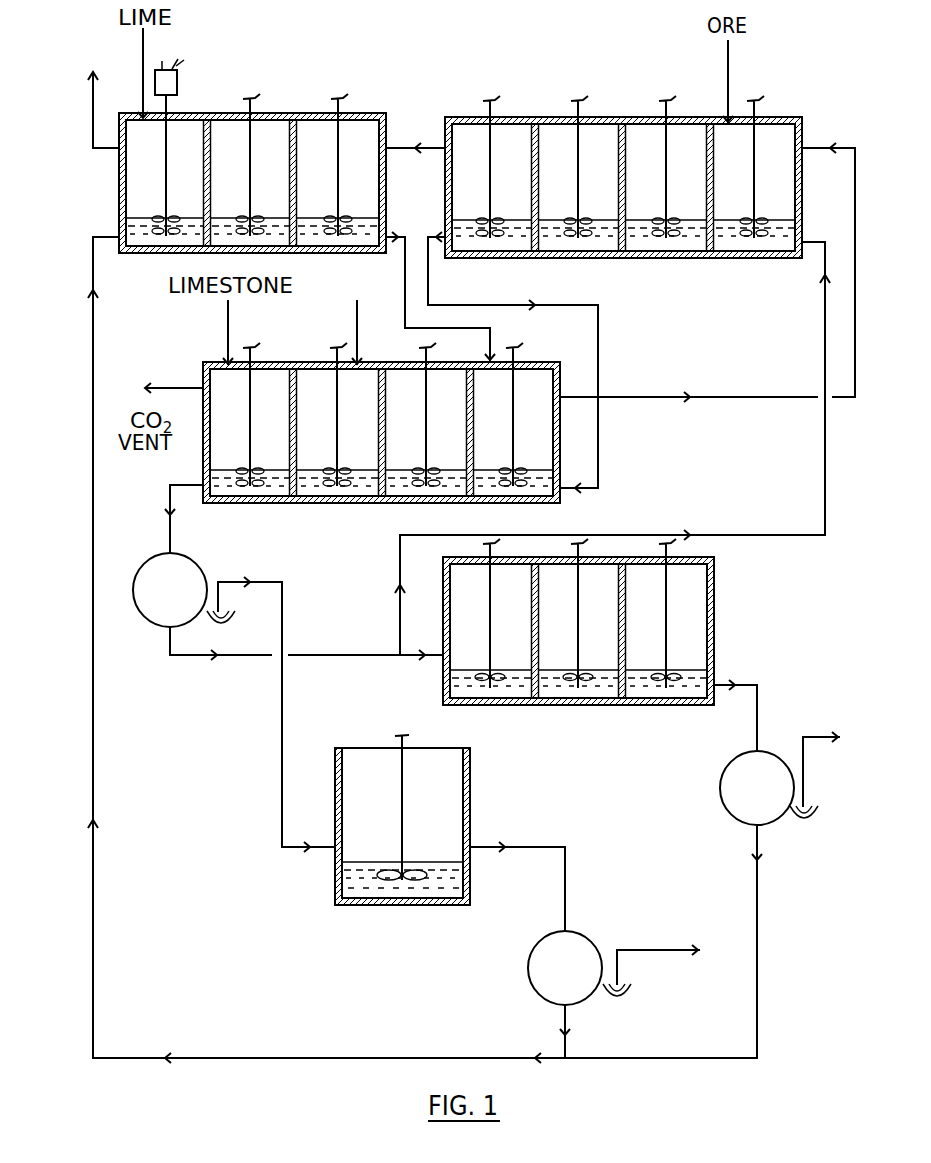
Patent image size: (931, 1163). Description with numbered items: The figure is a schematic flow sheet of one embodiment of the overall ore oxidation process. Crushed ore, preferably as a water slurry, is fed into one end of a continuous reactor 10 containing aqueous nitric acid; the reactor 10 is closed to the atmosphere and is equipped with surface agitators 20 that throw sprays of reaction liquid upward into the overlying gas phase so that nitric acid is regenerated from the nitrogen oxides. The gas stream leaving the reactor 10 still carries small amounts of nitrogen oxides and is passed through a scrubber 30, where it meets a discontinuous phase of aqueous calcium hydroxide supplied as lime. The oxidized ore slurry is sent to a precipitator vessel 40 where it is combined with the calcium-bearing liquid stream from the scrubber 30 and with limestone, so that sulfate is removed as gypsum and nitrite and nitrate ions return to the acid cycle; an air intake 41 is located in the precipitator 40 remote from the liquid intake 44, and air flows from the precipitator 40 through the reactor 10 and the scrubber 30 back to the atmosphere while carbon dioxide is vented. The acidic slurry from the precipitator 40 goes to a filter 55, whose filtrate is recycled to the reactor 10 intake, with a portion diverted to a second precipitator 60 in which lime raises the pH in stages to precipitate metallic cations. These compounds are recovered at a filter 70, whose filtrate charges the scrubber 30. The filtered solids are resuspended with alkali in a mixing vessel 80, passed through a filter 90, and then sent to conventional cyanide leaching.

The continuous reactor 10 is at (630, 165).
The surface agitators 20 is at (490, 220).
The scrubber 30 is at (272, 113).
The precipitator vessel 40 is at (318, 362).
The air intake 41 is at (361, 319).
The liquid intake 44 is at (588, 491).
The filter 55 is at (152, 626).
The second precipitator 60 is at (572, 705).
The filter 70 is at (722, 808).
The mixing vessel 80 is at (470, 808).
The filter 90 is at (528, 962).